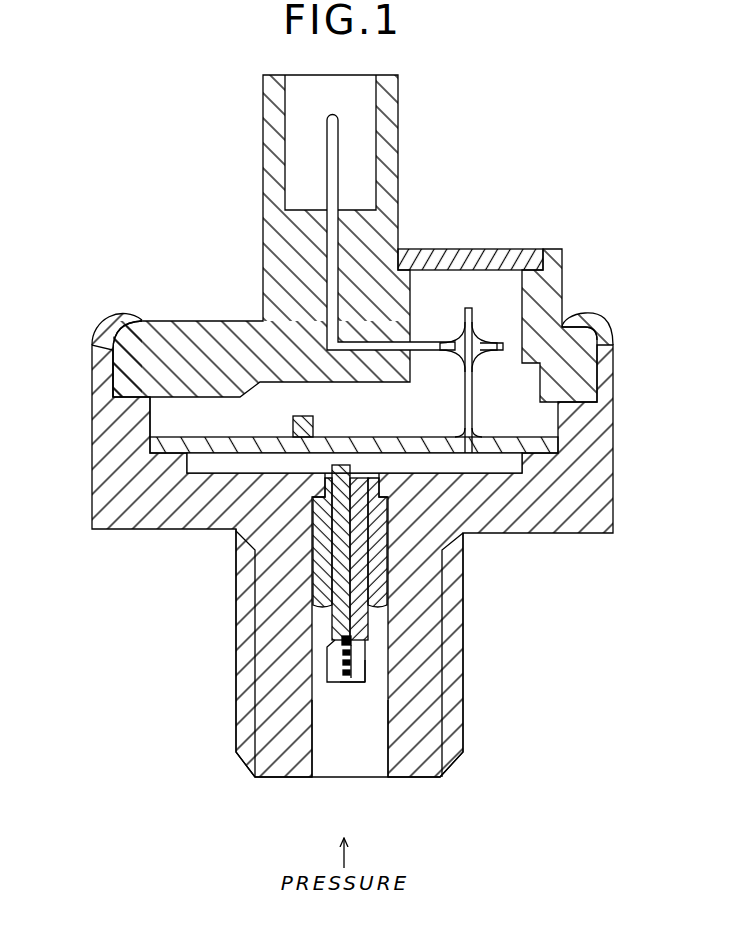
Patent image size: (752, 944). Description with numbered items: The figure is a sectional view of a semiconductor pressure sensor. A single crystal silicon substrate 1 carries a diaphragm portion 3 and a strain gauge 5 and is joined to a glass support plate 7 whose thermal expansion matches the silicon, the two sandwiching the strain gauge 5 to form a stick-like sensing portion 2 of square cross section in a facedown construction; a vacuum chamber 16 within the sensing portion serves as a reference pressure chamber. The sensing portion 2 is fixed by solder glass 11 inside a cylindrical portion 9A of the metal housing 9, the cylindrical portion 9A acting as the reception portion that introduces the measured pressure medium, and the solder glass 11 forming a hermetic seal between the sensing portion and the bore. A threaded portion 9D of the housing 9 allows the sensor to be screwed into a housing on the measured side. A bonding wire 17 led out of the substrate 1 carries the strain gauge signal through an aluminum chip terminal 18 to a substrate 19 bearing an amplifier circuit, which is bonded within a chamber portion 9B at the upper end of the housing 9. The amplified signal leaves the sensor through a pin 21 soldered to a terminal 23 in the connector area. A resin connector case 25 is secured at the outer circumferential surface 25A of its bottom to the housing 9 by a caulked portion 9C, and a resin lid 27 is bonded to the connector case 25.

The single crystal silicon substrate 1 is at (333, 682).
The sensing portion 2 is at (354, 690).
The diaphragm portion 3 is at (325, 658).
The strain gauge 5 is at (353, 642).
The support plate 7 is at (357, 658).
The housing 9 is at (593, 520).
The cylindrical portion 9A is at (430, 588).
The chamber portion 9B is at (157, 415).
The caulked portion 9C is at (103, 330).
The threaded portion 9D is at (447, 722).
The solder glass 11 is at (320, 577).
The vacuum chamber 16 is at (370, 682).
The bonding wire 17 is at (243, 343).
The chip terminal 18 is at (353, 467).
The substrate provided with an amplifier circuit 19 is at (543, 448).
The pin 21 is at (467, 393).
The terminal 23 is at (333, 177).
The connector case 25 is at (547, 300).
The outer circumferential surface of the bottom portion 25A is at (123, 345).
The resin lid 27 is at (500, 249).